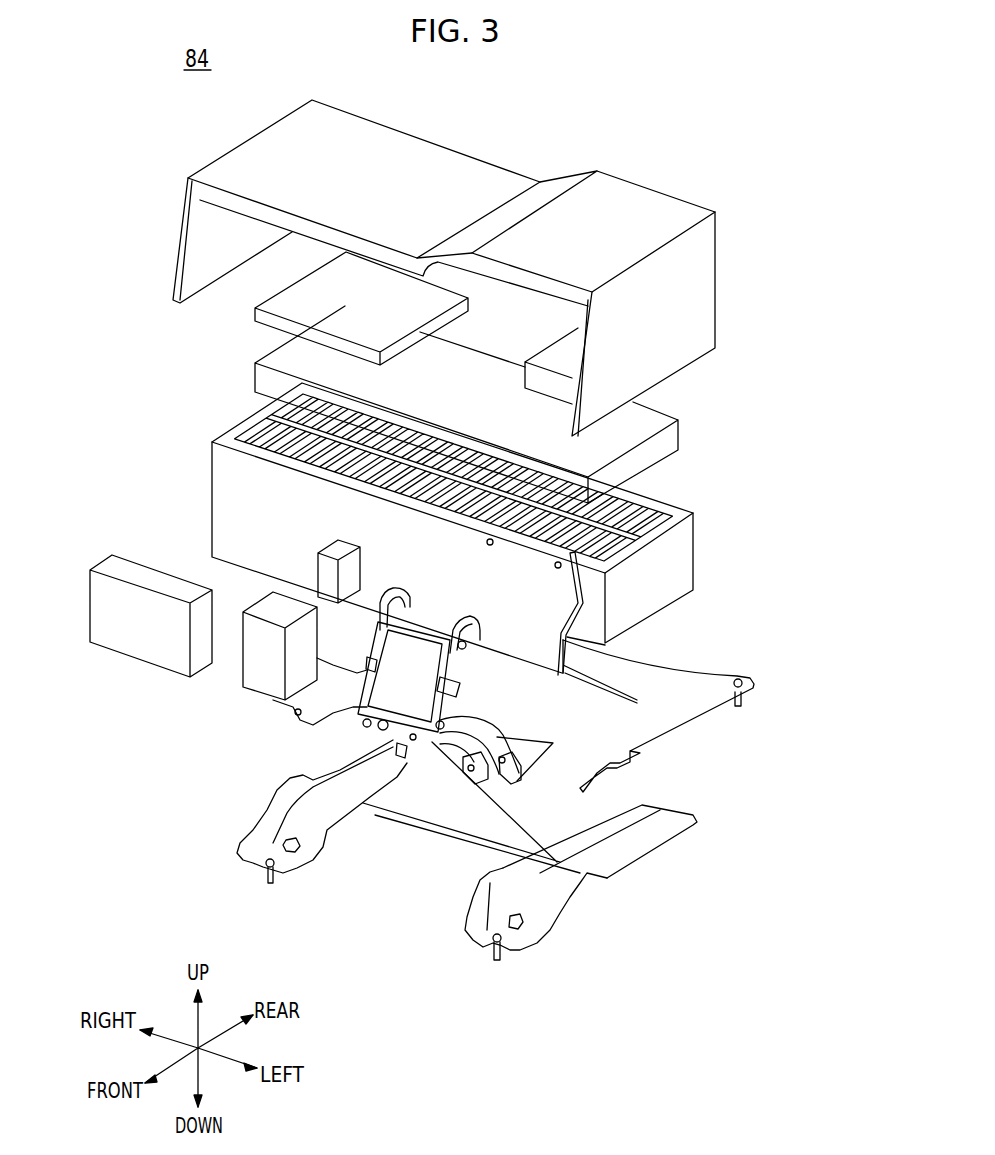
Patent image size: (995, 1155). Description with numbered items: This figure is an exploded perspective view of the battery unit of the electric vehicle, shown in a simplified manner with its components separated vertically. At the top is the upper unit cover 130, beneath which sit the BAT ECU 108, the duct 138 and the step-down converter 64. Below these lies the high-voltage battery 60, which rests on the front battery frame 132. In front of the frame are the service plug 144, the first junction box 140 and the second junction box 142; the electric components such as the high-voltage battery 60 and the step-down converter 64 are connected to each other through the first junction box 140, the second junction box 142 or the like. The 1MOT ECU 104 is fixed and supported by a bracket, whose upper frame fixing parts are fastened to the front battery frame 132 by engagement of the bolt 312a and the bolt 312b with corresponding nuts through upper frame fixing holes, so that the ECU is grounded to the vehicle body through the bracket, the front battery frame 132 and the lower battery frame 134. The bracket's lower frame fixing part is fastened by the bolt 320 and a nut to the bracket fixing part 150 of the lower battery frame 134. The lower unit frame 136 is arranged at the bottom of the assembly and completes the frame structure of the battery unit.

The upper unit cover 130 is at (605, 193).
The BAT ECU 108 is at (350, 285).
The duct 138 is at (280, 357).
The step-down converter 64 is at (560, 352).
The high-voltage battery 60 is at (265, 423).
The front battery frame 132 is at (227, 473).
The service plug 144 is at (335, 552).
The first junction box 140 is at (123, 637).
The second junction box 142 is at (250, 665).
The 1MOT ECU 104 is at (412, 647).
The bolt 312a is at (556, 568).
The bolt 312b is at (490, 546).
The bolt 320 is at (500, 757).
The bracket fixing part 150 is at (503, 770).
The lower battery frame 134 is at (687, 733).
The lower unit frame 136 is at (653, 857).